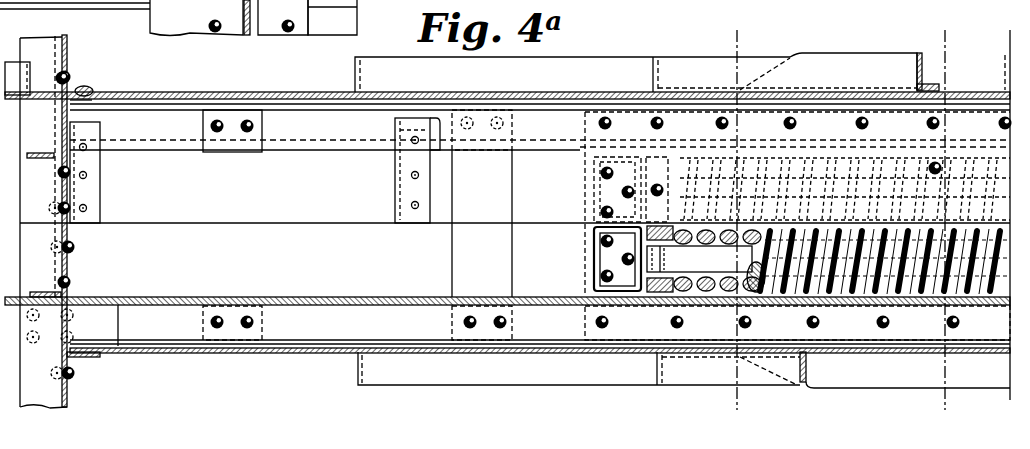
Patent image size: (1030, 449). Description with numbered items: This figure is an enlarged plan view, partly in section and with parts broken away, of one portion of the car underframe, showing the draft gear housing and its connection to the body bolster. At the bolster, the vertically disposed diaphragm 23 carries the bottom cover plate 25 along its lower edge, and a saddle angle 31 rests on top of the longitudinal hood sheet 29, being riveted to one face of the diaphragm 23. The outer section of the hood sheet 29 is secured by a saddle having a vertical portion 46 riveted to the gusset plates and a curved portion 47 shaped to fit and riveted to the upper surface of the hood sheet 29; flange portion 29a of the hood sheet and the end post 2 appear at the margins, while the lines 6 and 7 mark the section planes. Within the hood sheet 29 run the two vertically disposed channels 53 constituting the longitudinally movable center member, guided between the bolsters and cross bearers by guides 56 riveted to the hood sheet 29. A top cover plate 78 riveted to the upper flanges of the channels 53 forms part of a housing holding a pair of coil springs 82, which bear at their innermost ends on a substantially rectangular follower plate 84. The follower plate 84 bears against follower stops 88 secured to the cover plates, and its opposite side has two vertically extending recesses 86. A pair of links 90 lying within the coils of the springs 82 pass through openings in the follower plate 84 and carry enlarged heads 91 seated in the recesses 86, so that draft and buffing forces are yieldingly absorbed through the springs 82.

The end post 2 is at (37, 160).
The section line 6- 6 is at (750, 42).
The section line 7- 7 is at (960, 42).
The diaphragm 23 is at (248, 37).
The bottom cover plate 25 is at (197, 20).
The hood sheet 29 is at (213, 92).
The rail flange 29a is at (125, 10).
The saddle angle 31 is at (332, 18).
The vertical portion 46 is at (70, 76).
The curved portion 47 is at (95, 93).
The channels 53 is at (311, 150).
The guides 56 is at (396, 184).
The top cover plate 78 is at (813, 124).
The coil springs 82 is at (860, 298).
The follower plate 84 is at (597, 238).
The recesses 86 is at (688, 293).
The follower stops 88 is at (596, 258).
The links 90 is at (758, 296).
The enlarged heads 91 is at (652, 293).